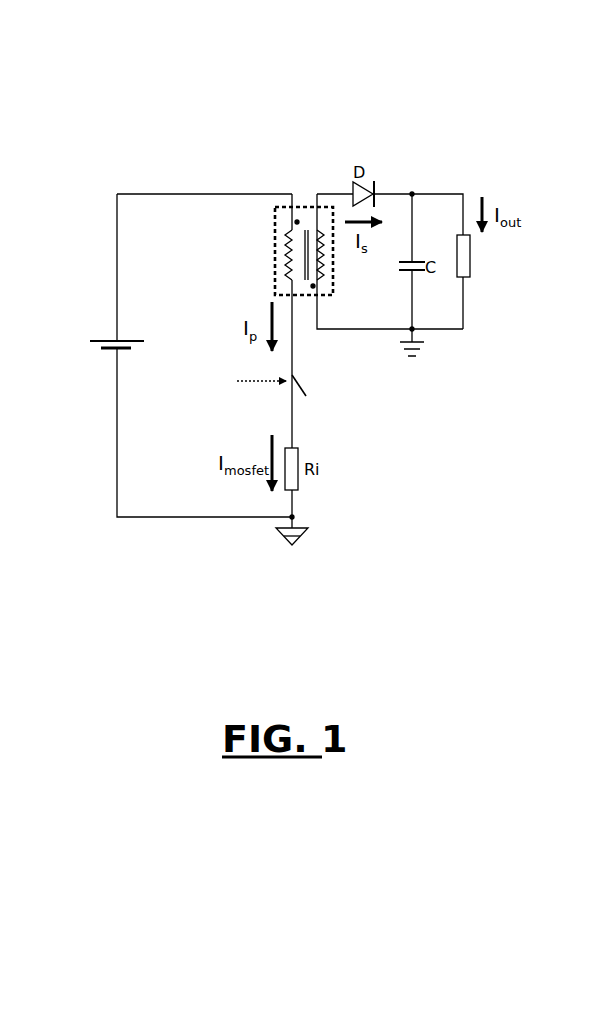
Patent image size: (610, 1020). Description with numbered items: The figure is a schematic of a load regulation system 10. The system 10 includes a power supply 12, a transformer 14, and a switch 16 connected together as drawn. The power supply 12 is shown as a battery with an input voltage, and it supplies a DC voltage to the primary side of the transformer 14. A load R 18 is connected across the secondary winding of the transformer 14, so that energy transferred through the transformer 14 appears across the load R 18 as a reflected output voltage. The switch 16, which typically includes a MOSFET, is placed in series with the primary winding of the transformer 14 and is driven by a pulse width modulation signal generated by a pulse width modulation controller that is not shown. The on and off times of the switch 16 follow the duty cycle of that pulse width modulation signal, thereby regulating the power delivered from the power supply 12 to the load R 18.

The load regulation system 10 is at (316, 97).
The power supply 12 is at (124, 342).
The transformer 14 is at (275, 250).
The switch 16 is at (293, 373).
The load R 18 is at (470, 267).